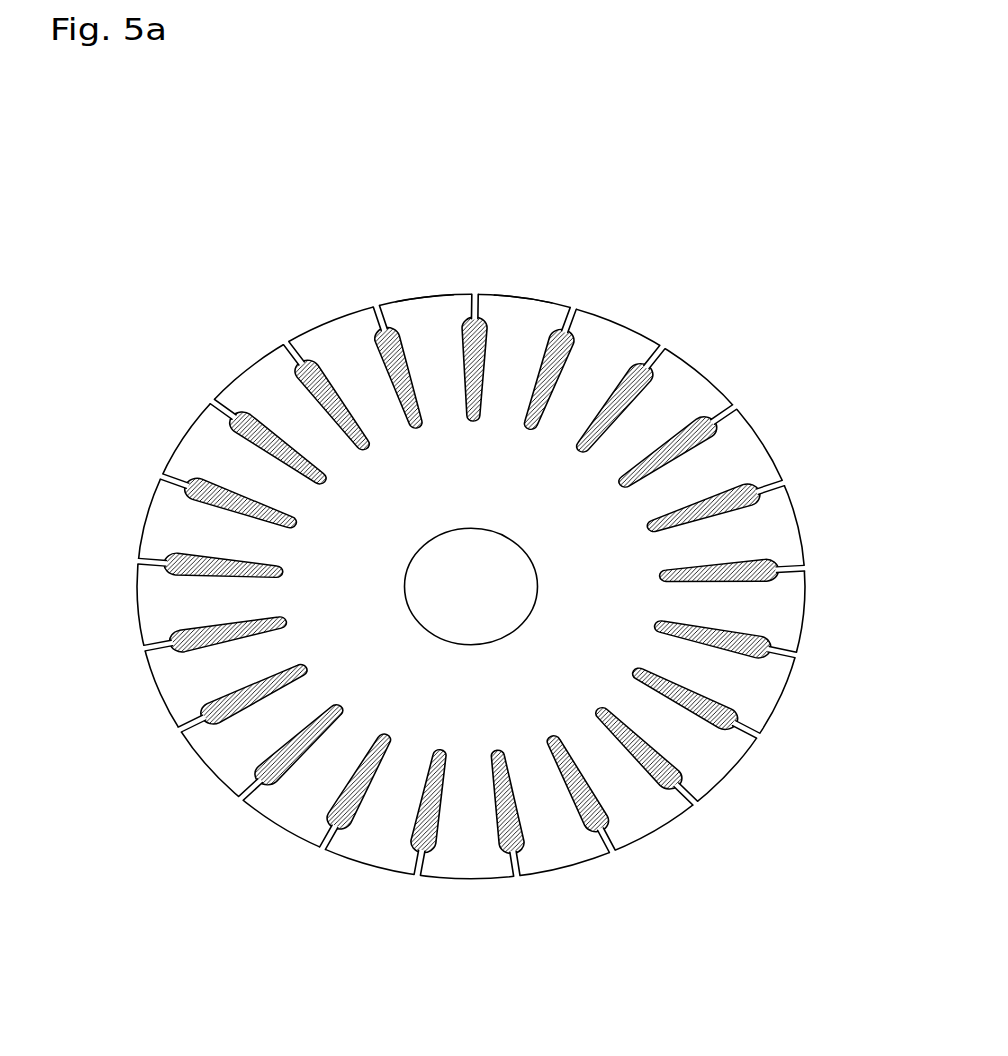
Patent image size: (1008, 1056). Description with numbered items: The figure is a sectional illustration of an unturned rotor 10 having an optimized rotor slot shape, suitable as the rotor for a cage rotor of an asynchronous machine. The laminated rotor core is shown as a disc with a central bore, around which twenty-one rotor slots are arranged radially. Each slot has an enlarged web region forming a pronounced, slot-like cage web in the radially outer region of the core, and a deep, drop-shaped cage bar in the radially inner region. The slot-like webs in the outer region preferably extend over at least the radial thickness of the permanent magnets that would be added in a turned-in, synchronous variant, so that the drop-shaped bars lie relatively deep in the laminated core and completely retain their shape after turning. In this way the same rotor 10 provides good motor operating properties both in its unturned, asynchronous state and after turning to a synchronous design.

The unturned rotor 10 is at (137, 187).